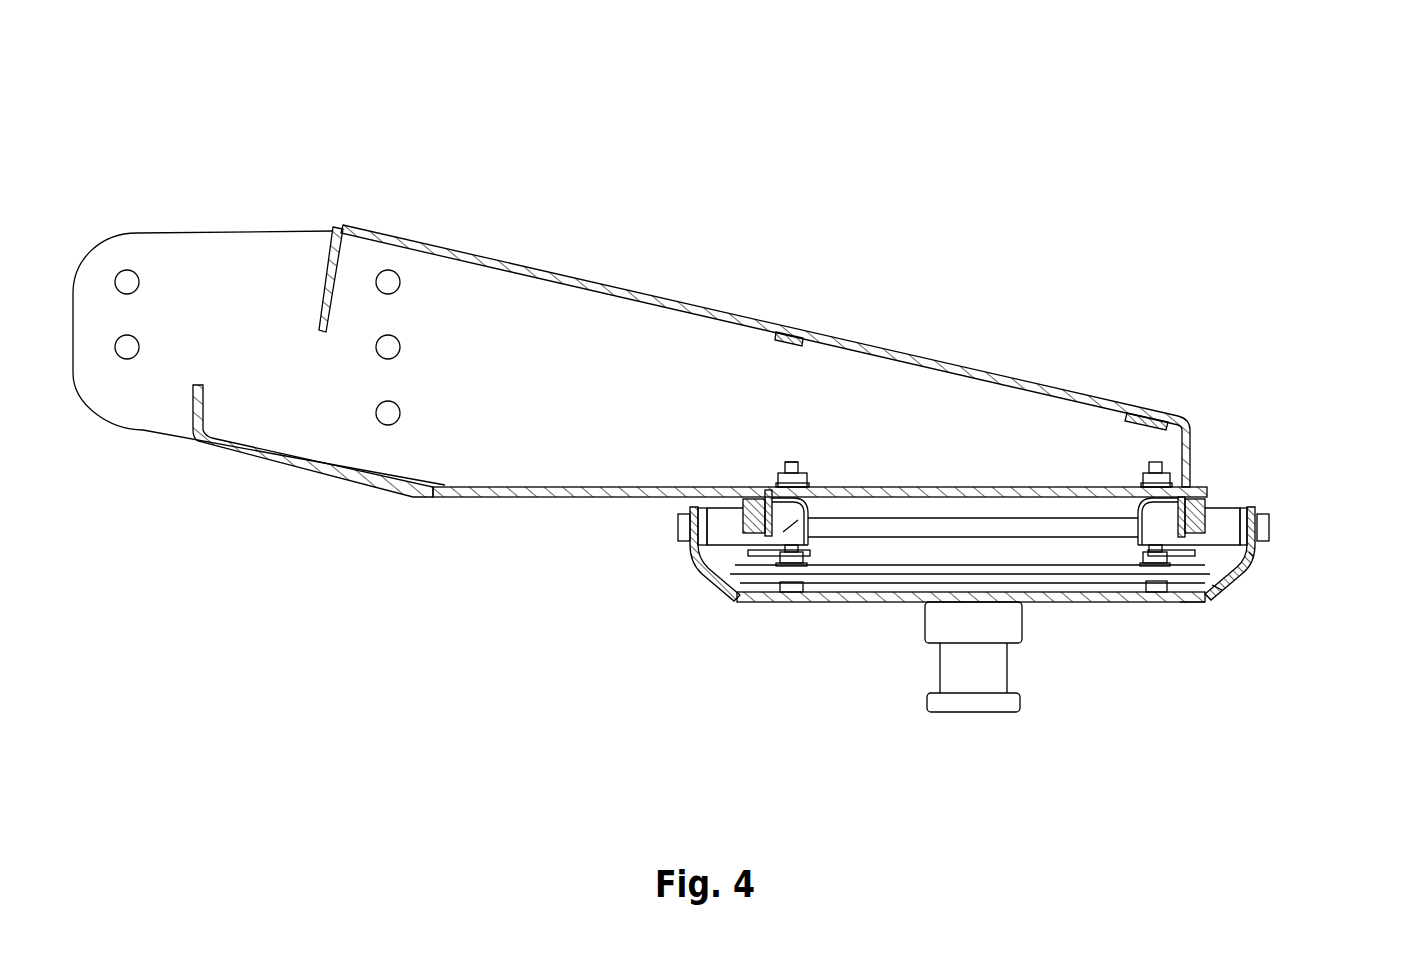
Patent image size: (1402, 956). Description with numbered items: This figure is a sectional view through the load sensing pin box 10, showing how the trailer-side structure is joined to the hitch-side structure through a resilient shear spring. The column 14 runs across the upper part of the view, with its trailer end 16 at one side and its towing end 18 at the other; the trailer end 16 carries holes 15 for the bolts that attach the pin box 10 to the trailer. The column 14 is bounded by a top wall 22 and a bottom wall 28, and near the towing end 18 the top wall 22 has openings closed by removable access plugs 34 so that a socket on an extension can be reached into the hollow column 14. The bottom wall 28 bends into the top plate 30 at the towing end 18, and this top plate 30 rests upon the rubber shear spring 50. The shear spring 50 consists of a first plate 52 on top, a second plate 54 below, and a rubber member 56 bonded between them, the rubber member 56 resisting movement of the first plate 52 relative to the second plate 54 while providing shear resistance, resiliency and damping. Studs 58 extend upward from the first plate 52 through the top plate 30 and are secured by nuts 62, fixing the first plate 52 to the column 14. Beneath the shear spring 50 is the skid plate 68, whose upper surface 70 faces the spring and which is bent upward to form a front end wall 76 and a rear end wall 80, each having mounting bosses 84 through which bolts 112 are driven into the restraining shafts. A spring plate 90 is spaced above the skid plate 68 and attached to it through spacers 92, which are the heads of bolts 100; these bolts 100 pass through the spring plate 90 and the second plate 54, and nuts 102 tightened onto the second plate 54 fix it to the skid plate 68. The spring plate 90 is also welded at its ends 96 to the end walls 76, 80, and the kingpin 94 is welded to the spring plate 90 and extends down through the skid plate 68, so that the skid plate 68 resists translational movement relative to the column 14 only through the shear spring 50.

The load sensing pin box 10 is at (667, 155).
The column 14 is at (482, 257).
The holes 15 is at (139, 287).
The trailer end 16 is at (176, 200).
The towing end 18 is at (1117, 299).
The top wall 22 is at (699, 312).
The bottom wall 28 is at (268, 455).
The top plate 30 is at (908, 487).
The access plugs 34 is at (801, 334).
The shear spring 50 is at (740, 597).
The first plate 52 is at (804, 480).
The second plate 54 is at (738, 580).
The rubber member 56 is at (920, 535).
The studs 58 is at (790, 462).
The nuts 62 is at (778, 478).
The skid plate 68 is at (1186, 607).
The upper surface 70 is at (1066, 583).
The front end wall 76 is at (1258, 551).
The rear end wall 80 is at (698, 565).
The mounting bosses 84 is at (743, 498).
The spring plate 90 is at (1030, 610).
The spacers 92 is at (790, 603).
The kingpin 94 is at (975, 713).
The ends 96 is at (783, 532).
The bolts 100 is at (806, 530).
The nuts 102 is at (803, 548).
The bolts 112 is at (678, 531).